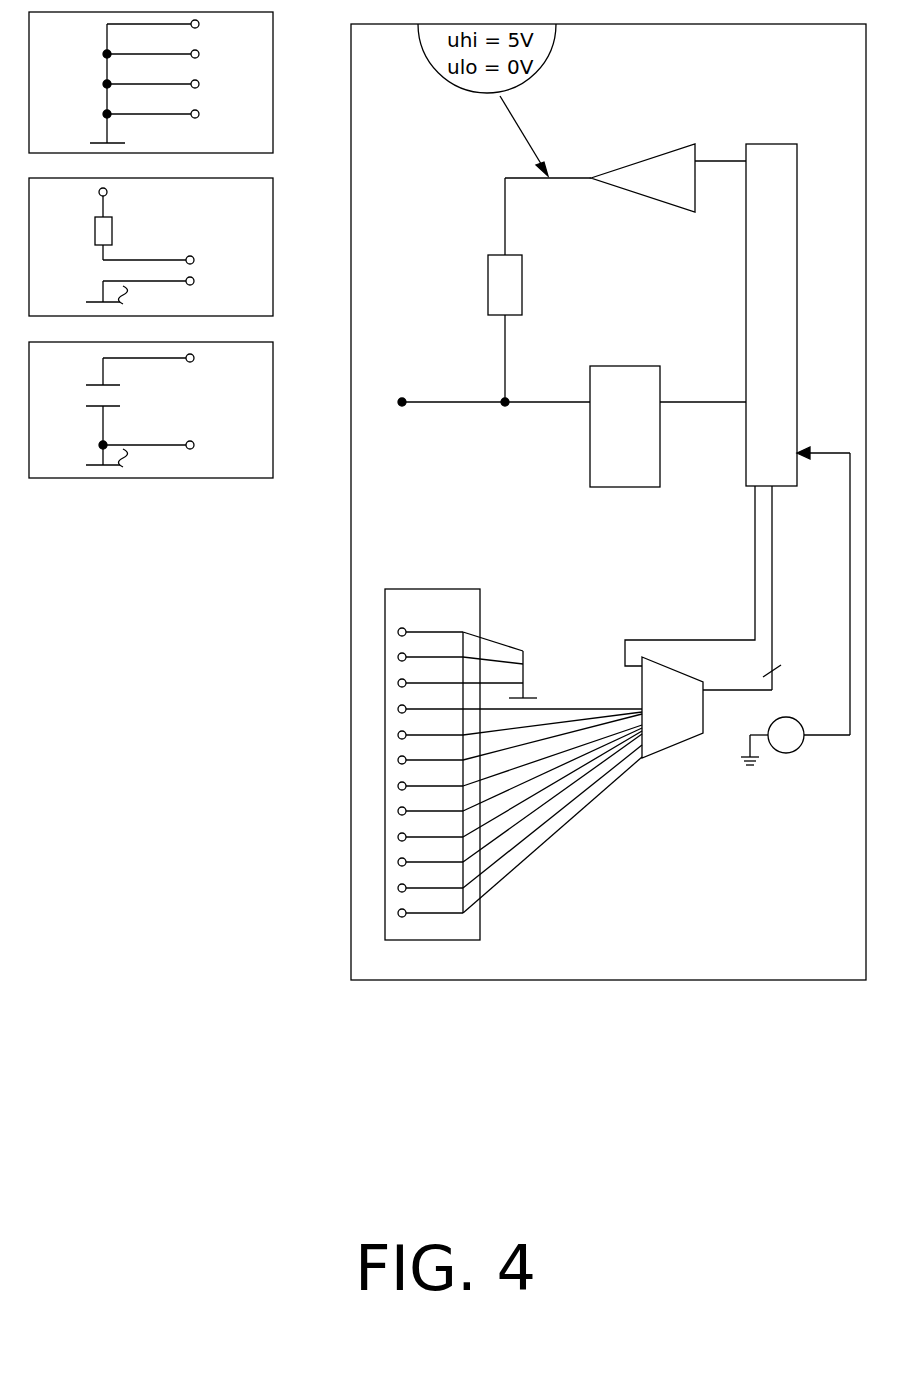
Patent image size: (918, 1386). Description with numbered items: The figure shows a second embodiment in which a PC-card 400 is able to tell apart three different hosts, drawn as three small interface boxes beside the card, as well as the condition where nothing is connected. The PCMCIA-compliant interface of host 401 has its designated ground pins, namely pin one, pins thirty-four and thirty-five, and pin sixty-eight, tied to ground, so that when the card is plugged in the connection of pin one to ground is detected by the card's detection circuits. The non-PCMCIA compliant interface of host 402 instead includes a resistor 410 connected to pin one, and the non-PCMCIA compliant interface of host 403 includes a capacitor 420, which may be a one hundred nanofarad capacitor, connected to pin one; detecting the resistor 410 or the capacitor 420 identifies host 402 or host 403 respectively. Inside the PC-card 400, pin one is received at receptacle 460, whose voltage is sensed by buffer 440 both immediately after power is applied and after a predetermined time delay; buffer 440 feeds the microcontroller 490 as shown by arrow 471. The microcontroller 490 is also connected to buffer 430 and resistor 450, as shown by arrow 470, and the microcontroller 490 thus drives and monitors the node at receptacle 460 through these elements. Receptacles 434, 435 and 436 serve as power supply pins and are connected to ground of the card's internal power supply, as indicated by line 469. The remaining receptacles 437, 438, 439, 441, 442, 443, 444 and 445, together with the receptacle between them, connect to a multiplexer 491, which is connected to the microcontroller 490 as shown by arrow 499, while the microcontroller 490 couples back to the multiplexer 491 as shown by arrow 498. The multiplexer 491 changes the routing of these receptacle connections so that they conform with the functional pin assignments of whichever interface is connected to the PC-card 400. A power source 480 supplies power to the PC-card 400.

The PC-card 400 is at (608, 502).
The host with PCMCIA-compliant interface 401 is at (275, 138).
The host with non-PCMCIA compliant interface 402 is at (181, 247).
The host with non-PCMCIA compliant interface 403 is at (181, 410).
The resistor 410 is at (97, 230).
The capacitor 420 is at (87, 402).
The buffer 430 is at (623, 168).
The buffer 440 is at (591, 478).
The resistor 450 is at (488, 314).
The receptacle 460 is at (402, 410).
The arrow 470 is at (720, 161).
The arrow 471 is at (697, 408).
The power source 480 is at (789, 754).
The microcontroller 490 is at (798, 439).
The multiplexer 491 is at (672, 707).
The arrow 498 is at (672, 639).
The arrow 499 is at (773, 580).
The line 469 is at (527, 686).
The receptacle 434 is at (460, 630).
The receptacle 435 is at (460, 649).
The receptacle 436 is at (460, 673).
The receptacle 437 is at (520, 699).
The receptacle 438 is at (520, 725).
The receptacle 439 is at (520, 739).
The receptacle 441 is at (520, 771).
The receptacle 442 is at (520, 786).
The receptacle 443 is at (520, 800).
The receptacle 444 is at (520, 818).
The receptacle 445 is at (520, 837).